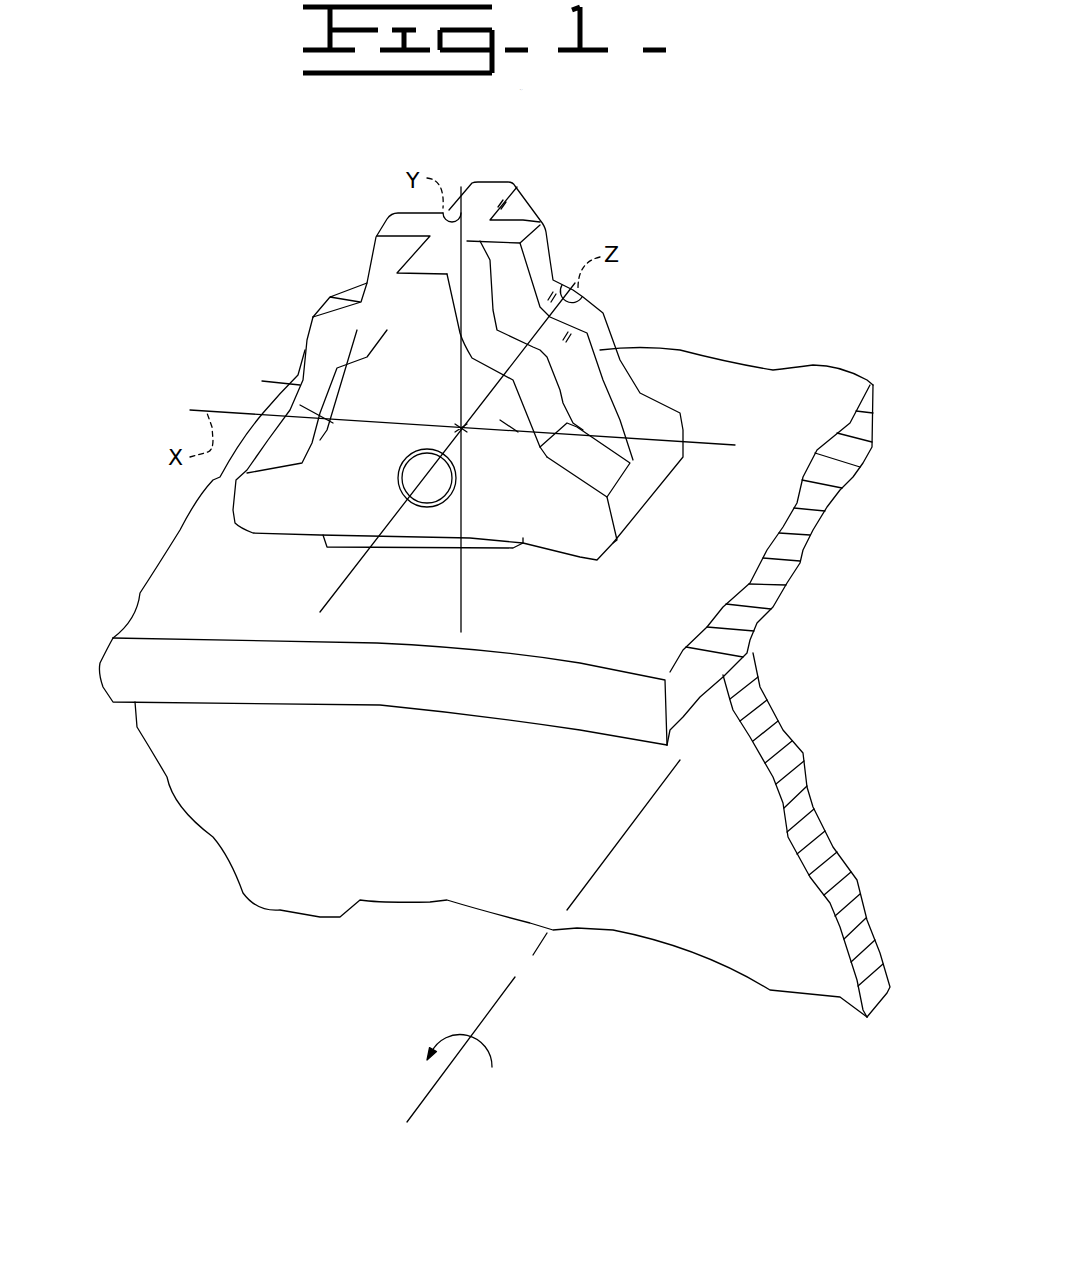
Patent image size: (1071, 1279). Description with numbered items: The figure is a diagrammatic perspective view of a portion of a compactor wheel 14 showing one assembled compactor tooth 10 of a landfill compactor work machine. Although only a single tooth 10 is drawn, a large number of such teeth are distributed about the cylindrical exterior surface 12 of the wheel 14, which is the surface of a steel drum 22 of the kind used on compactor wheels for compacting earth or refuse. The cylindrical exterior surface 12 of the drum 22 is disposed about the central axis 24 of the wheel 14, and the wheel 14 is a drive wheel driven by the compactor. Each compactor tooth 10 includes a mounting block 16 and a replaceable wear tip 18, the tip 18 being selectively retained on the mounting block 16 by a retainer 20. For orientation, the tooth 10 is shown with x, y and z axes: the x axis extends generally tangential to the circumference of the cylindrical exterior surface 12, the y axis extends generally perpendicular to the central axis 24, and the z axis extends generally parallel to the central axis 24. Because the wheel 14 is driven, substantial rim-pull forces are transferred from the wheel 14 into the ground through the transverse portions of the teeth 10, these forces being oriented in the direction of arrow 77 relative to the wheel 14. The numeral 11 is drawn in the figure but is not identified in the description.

The compactor tooth 10 is at (544, 178).
The cutting edges 11 is at (333, 428).
The cylindrical exterior surface 12 is at (777, 377).
The compactor wheel 14 is at (131, 736).
The mounting block 16 is at (418, 558).
The replaceable wear tip 18 is at (303, 336).
The retainer 20 is at (413, 481).
The steel drum 22 is at (833, 477).
The central axis 24 is at (637, 820).
The arrow 77 is at (262, 380).